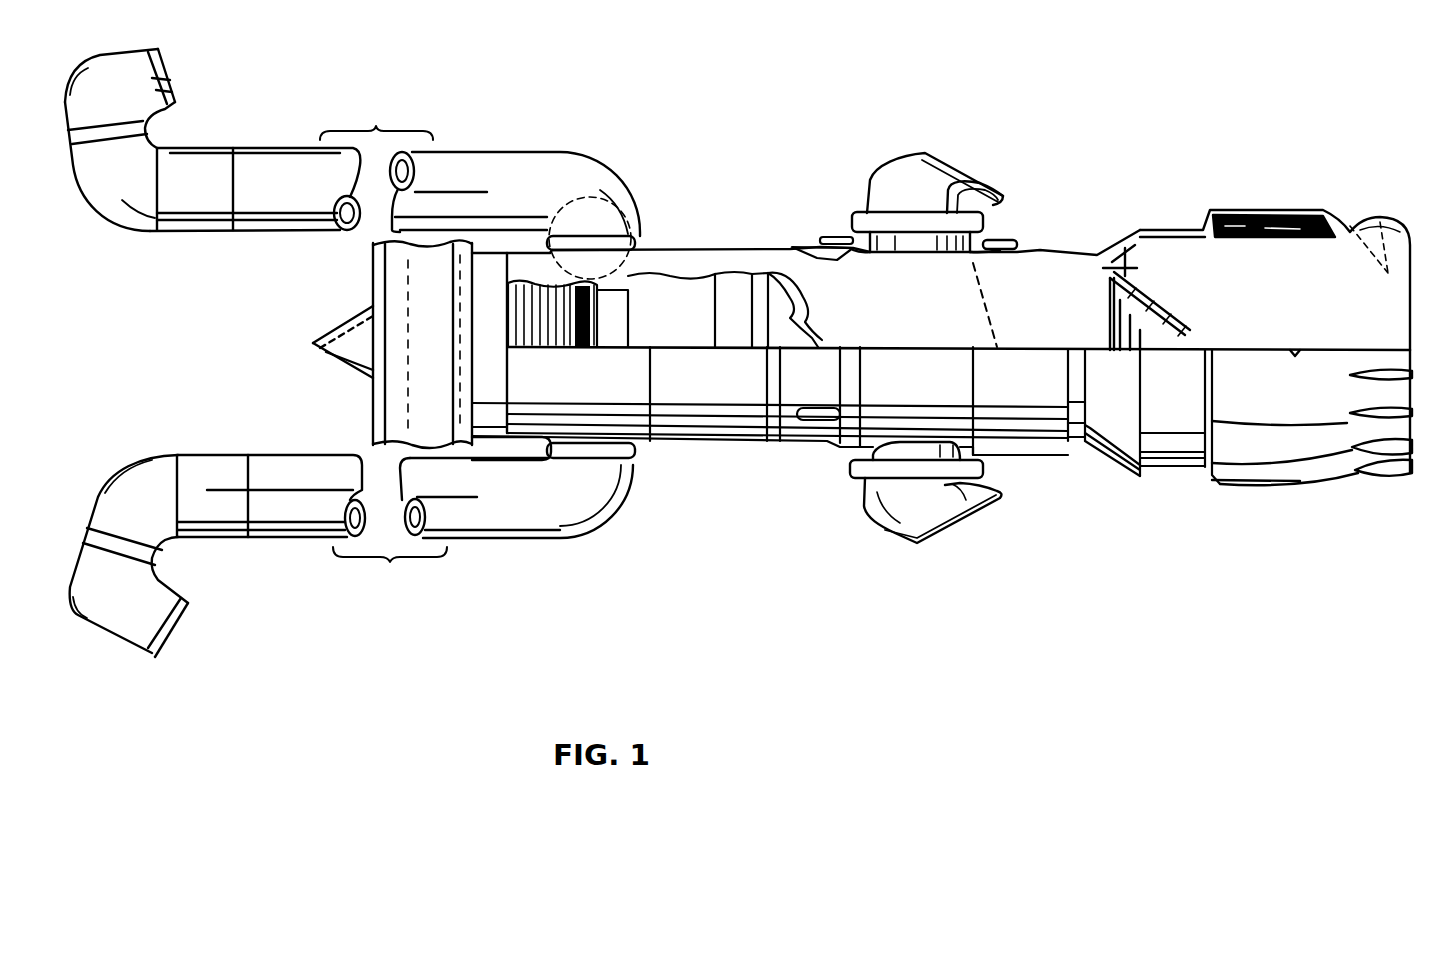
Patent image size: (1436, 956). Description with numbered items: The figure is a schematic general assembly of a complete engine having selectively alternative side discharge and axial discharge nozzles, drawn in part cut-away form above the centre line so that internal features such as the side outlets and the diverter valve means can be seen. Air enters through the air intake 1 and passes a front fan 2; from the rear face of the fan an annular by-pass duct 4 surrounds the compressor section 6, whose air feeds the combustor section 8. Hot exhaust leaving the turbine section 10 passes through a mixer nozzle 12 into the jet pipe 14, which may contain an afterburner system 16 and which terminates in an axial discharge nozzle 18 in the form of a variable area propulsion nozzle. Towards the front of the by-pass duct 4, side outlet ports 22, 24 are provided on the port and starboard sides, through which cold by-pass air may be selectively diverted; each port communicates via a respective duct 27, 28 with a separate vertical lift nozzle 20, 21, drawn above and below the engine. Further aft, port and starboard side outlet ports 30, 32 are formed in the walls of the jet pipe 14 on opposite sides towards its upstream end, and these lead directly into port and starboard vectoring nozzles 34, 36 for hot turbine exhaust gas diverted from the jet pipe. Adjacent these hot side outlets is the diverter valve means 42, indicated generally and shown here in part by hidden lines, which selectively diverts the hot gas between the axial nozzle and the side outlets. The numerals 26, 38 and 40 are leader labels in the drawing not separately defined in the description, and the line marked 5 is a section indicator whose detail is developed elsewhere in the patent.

The air intake 1 is at (260, 295).
The front fan 2 is at (478, 368).
The annular by-pass duct 4 is at (740, 250).
The compressor section 6 is at (553, 340).
The combustor section 8 is at (667, 333).
The turbine section 10 is at (730, 333).
The mixer nozzle 12 is at (812, 342).
The jet pipe 14 is at (1047, 460).
The afterburner system 16 is at (1192, 296).
The axial discharge nozzle 18 is at (1337, 368).
The vertical lift nozzle 20 is at (195, 70).
The vertical lift nozzle 21 is at (185, 645).
The side outlet port 22 is at (602, 218).
The side outlet port 24 is at (590, 470).
The body top wall 26 is at (690, 250).
The duct 27 is at (490, 150).
The duct 28 is at (493, 520).
The side outlet port 30 is at (980, 180).
The side outlet port 32 is at (905, 440).
The vectoring nozzle 34 is at (938, 148).
The vectoring nozzle 36 is at (880, 545).
The neck 38 is at (952, 275).
The tab 40 is at (843, 272).
The diverter valve means 42 is at (1000, 325).
The section line 5- 5 is at (1042, 193).